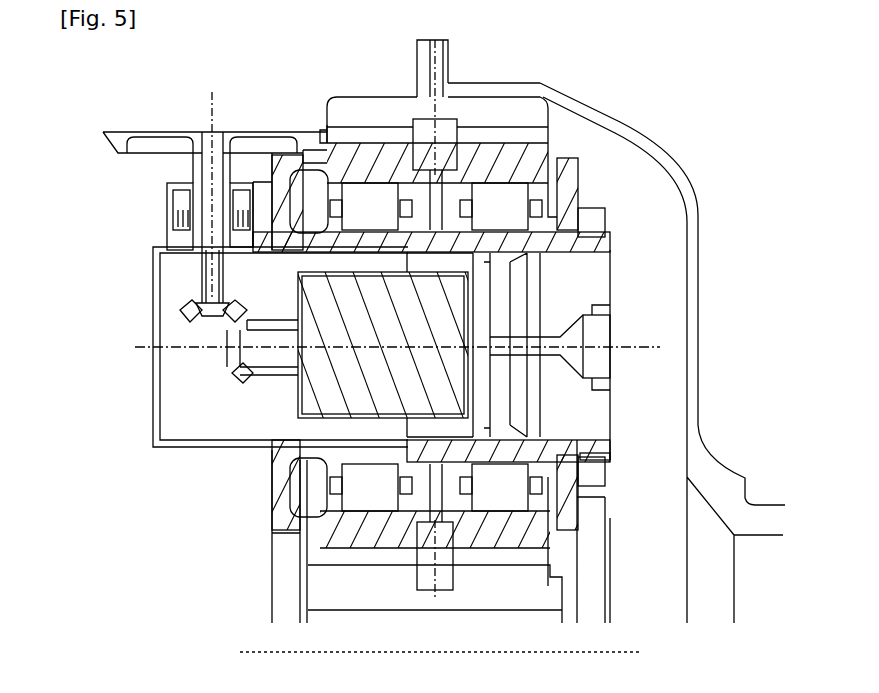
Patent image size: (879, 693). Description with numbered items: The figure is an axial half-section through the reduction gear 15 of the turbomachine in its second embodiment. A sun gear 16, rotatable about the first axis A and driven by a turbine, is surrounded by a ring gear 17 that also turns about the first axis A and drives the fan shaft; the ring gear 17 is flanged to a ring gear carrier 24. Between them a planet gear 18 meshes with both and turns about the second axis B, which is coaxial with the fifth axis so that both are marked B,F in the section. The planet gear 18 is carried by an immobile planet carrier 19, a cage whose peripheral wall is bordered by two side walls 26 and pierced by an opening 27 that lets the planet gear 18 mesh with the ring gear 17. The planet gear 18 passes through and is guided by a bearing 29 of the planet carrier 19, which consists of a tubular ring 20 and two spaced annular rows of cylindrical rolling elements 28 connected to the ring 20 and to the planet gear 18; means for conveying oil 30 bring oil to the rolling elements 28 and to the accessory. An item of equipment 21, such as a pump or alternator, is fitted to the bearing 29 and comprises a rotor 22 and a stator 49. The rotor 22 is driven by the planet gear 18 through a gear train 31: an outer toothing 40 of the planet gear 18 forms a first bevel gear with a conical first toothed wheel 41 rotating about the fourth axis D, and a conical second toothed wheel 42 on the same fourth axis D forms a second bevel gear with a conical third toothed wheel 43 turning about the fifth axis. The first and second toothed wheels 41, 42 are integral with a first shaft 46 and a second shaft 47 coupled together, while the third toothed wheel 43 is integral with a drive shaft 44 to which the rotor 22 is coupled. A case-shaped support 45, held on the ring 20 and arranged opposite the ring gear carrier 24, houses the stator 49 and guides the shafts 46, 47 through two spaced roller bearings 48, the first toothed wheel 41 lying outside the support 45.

The reduction gear 15 is at (720, 158).
The sun gear 16 is at (337, 587).
The ring gear 17 is at (400, 103).
The planet gear 18 is at (380, 200).
The planet carrier 19 is at (596, 182).
The tubular ring 20 is at (265, 460).
The item of equipment 21 is at (613, 247).
The rotor 22 is at (287, 352).
The ring gear carrier 24 is at (603, 107).
The side walls 26 is at (282, 172).
The opening 27 is at (553, 167).
The rolling elements 28 is at (497, 198).
The bearing 29 is at (517, 178).
The means for conveying oil 30 is at (518, 305).
The gear train 31 is at (177, 273).
The outer toothing 40 is at (318, 150).
The first toothed wheel 41 is at (158, 146).
The second toothed wheel 42 is at (192, 308).
The third toothed wheel 43 is at (227, 357).
The drive shaft 44 is at (232, 352).
The support 45 is at (142, 428).
The first shaft 46 is at (205, 174).
The second shaft 47 is at (205, 283).
The roller bearings 48 is at (180, 220).
The stator 49 is at (435, 383).
The fourth axis D is at (206, 103).
The first axis A is at (268, 652).
The second axis and fifth axis B,F is at (138, 347).